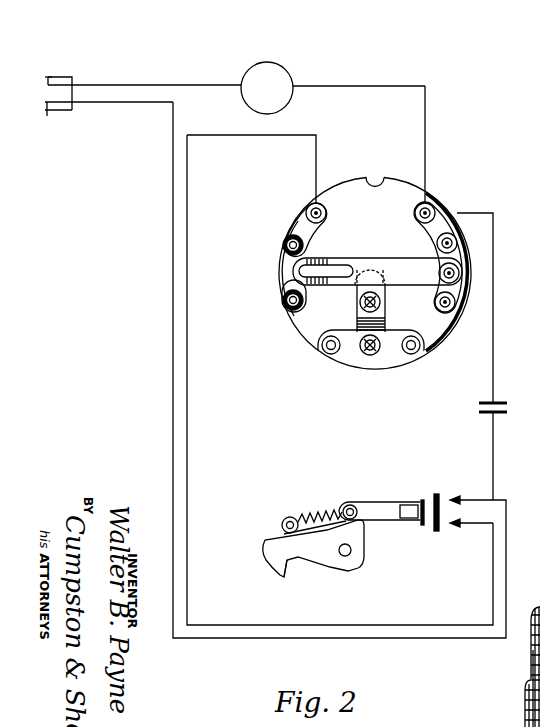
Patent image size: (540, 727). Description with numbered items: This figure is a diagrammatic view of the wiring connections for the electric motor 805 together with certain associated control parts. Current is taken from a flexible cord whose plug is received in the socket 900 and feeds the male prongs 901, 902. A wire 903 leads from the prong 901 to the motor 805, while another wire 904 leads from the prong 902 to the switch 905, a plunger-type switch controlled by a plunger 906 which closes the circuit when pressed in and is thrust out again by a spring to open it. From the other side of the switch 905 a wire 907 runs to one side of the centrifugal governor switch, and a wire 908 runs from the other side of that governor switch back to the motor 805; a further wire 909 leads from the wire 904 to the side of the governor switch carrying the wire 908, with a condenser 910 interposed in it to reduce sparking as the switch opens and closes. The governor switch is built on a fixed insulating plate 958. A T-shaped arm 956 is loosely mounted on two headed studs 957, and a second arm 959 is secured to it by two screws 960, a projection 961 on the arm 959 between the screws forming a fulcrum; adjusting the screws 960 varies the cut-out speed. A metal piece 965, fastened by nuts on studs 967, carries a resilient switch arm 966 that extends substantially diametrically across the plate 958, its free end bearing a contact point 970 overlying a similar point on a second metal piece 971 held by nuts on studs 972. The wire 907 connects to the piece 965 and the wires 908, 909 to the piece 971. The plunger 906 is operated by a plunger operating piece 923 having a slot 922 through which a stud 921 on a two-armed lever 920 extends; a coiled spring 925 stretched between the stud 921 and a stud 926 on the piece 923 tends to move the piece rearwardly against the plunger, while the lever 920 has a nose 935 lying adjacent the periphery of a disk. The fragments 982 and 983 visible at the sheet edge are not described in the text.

The motor 805 is at (289, 74).
The socket 900 is at (72, 78).
The male prong 901 is at (47, 77).
The male prong 902 is at (56, 111).
The wire 903 is at (158, 82).
The wire 904 is at (173, 335).
The switch 905 is at (444, 497).
The plunger 906 is at (422, 500).
The wire 907 is at (420, 625).
The wire 908 is at (425, 160).
The wire 909 is at (493, 376).
The condenser 910 is at (497, 414).
The two-armed lever 920 is at (270, 548).
The stud 921 is at (349, 503).
The slot 922 is at (356, 503).
The plunger operating piece 923 is at (388, 502).
The coiled spring 925 is at (318, 515).
The stud 926 is at (286, 518).
The nose 935 is at (284, 570).
The T-shaped arm 956 is at (352, 353).
The headed studs 957 is at (327, 355).
The insulating plate 958 is at (381, 178).
The second arm 959 is at (385, 292).
The screws 960 is at (358, 340).
The projection 961 is at (377, 331).
The metal piece 965 is at (293, 225).
The switch arm 966 is at (400, 262).
The studs 967 is at (281, 292).
The contact point 970 is at (460, 273).
The metal piece 971 is at (447, 226).
The studs 972 is at (457, 244).
The label fragment 982 is at (539, 40).
The label fragment 983 is at (539, 157).